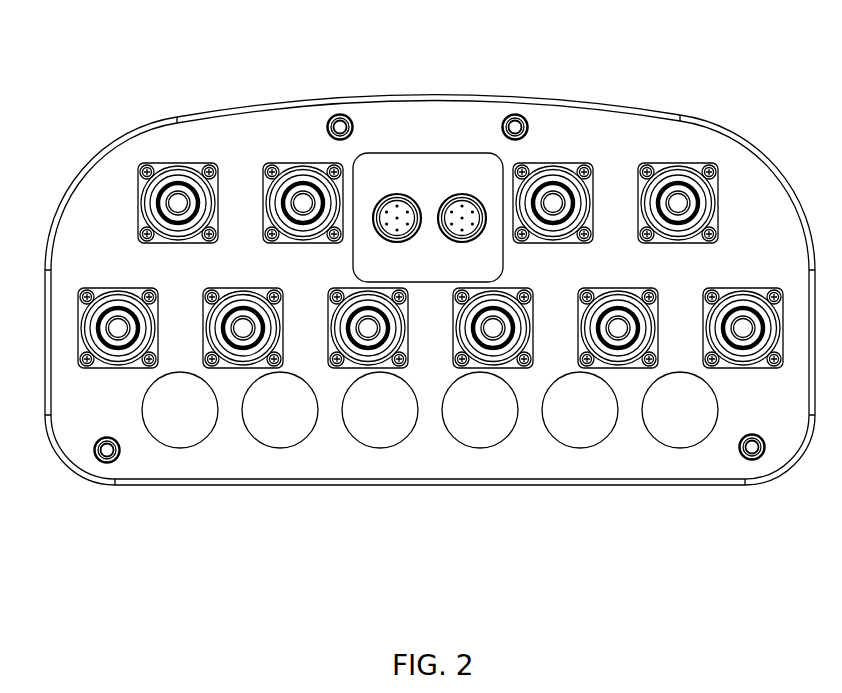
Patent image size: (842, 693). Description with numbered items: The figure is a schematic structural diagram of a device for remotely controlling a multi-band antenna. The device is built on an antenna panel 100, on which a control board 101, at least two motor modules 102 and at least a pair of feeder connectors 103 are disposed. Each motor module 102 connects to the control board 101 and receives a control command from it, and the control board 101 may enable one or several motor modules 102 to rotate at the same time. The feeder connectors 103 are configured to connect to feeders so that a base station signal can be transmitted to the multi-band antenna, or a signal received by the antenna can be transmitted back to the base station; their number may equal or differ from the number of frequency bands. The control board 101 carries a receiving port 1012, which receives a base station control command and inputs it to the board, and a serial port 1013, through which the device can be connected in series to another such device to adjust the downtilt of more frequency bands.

The antenna panel 100 is at (675, 106).
The control board 101 is at (432, 152).
The receiving port of the control board 1012 is at (393, 203).
The serial port of the control board 1013 is at (465, 203).
The motor module 102 is at (173, 422).
The feeder connector 103 is at (302, 160).